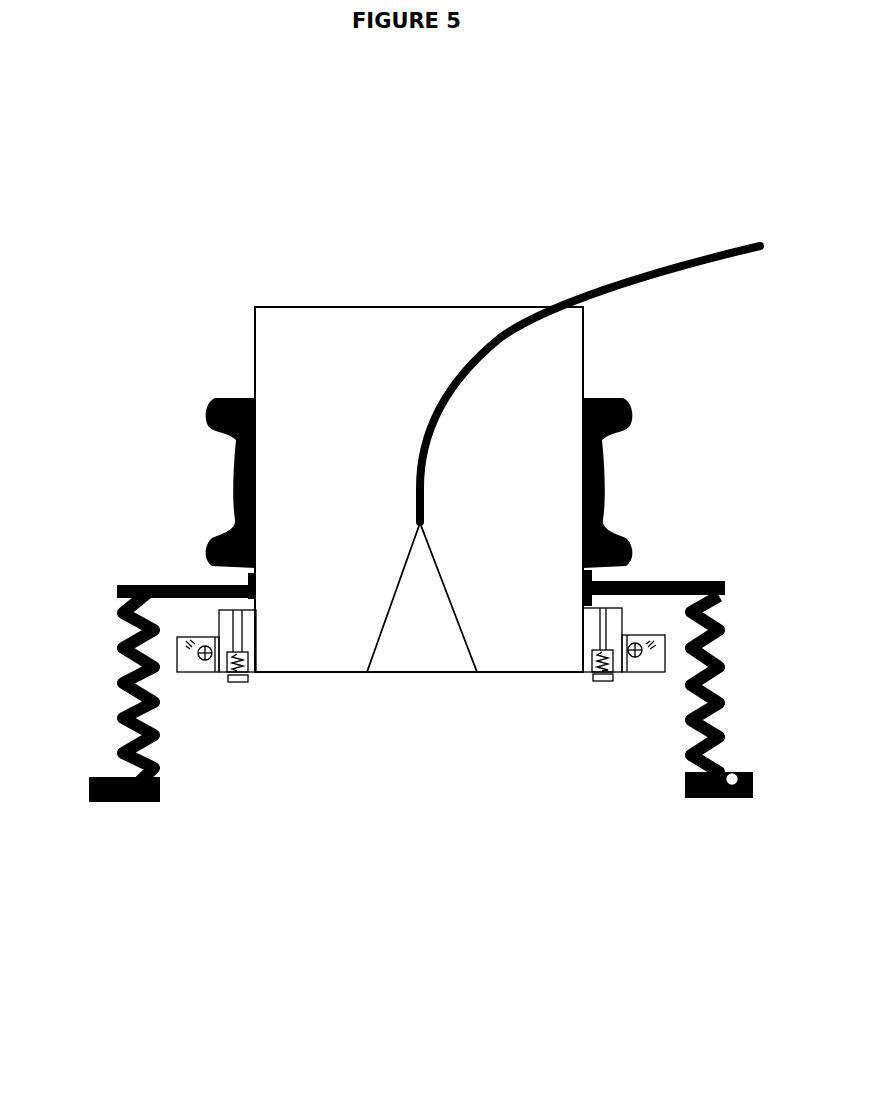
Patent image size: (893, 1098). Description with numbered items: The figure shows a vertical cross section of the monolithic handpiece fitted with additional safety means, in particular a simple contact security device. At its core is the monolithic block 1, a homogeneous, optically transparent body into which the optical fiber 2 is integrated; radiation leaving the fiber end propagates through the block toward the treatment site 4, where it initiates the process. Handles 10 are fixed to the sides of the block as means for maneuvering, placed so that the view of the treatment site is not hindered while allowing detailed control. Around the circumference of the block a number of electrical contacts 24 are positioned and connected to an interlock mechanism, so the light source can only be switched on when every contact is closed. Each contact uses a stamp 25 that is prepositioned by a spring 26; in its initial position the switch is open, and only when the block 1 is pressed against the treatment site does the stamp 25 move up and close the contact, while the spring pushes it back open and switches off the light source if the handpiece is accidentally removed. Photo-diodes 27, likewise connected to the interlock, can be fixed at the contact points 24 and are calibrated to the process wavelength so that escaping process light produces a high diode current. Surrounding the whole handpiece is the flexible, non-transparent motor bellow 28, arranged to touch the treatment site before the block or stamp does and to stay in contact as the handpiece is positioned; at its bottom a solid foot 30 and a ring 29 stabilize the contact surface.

The monolithic block 1 is at (272, 366).
The optical fiber 2 is at (711, 270).
The treatment site 4 is at (464, 674).
The handles 10 is at (628, 532).
The electrical contacts 24 is at (640, 622).
The stamp 25 is at (247, 687).
The spring 26 is at (262, 662).
The photo-diodes 27 is at (200, 656).
The motor bellow 28 is at (117, 620).
The ring 29 is at (140, 806).
The solid foot 30 is at (99, 805).